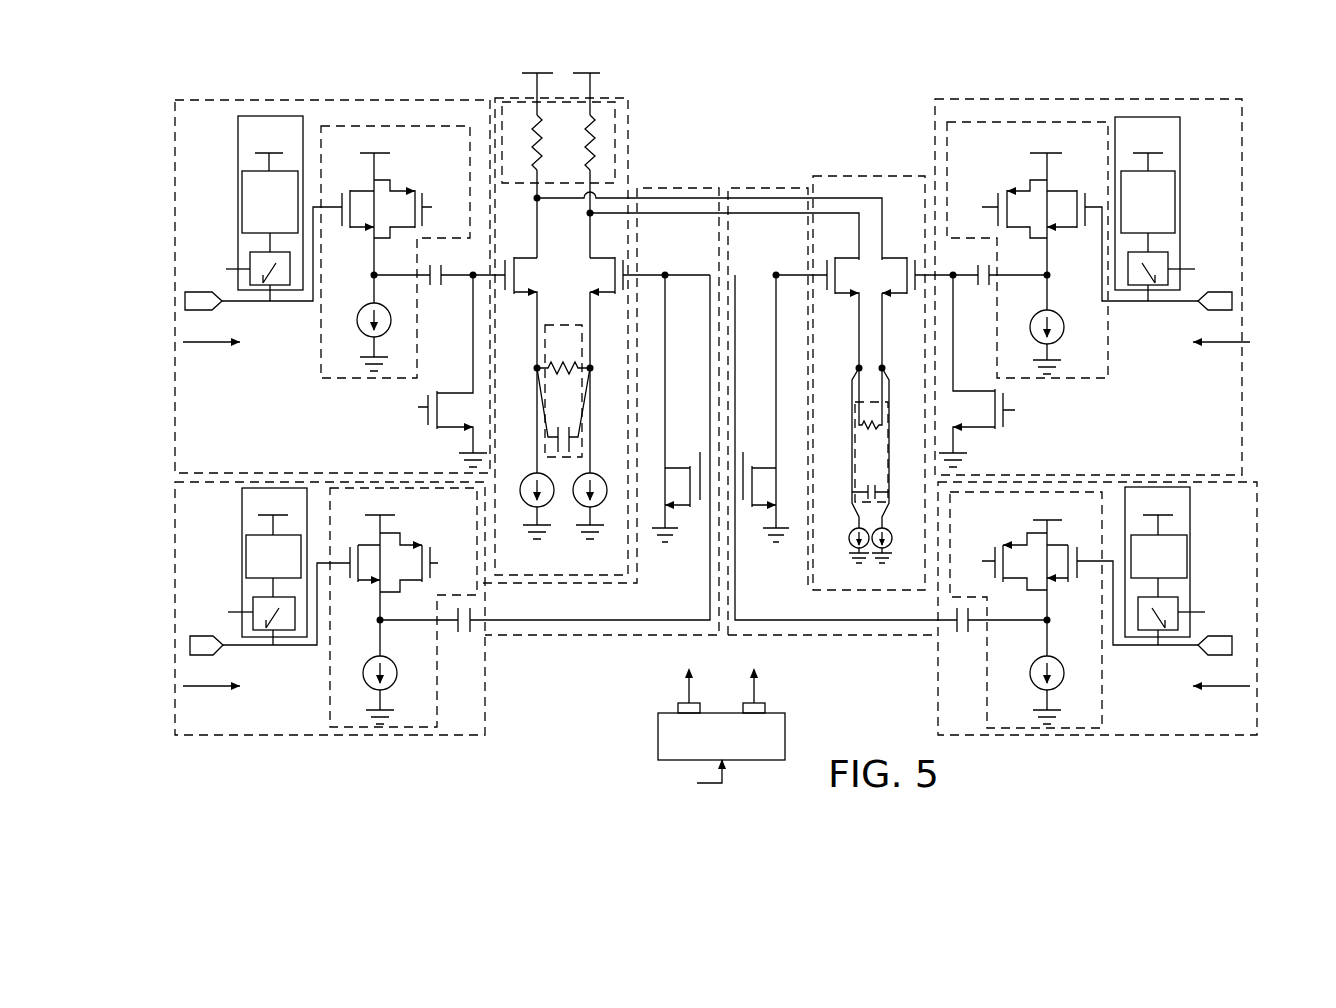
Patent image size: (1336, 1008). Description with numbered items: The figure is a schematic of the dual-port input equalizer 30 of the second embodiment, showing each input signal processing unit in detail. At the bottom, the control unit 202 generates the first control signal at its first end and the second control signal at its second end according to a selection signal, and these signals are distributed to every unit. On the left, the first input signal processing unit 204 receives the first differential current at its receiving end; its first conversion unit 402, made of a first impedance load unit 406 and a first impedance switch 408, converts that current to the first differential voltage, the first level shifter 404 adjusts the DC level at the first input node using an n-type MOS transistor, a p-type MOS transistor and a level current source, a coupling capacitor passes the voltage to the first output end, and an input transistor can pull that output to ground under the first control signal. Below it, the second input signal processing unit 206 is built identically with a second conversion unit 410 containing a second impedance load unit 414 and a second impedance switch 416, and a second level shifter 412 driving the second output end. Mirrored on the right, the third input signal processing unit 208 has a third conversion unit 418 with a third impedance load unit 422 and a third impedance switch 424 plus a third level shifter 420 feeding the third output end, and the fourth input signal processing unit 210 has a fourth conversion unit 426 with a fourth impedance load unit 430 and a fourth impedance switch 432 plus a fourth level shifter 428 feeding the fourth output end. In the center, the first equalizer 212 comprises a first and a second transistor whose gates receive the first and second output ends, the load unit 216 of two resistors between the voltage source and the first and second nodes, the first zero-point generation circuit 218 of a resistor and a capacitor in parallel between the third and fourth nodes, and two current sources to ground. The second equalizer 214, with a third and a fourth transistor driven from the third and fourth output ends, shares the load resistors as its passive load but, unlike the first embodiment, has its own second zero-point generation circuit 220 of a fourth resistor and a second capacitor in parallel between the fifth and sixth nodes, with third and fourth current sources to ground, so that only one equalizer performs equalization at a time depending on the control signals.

The dual-port input equalizer 30 is at (872, 93).
The control unit 202 is at (658, 740).
The first input signal processing unit 204 is at (330, 100).
The second input signal processing unit 206 is at (665, 188).
The third input signal processing unit 208 is at (1080, 99).
The fourth input signal processing unit 210 is at (775, 188).
The first equalizer 212 is at (628, 120).
The second equalizer 214 is at (894, 356).
The load unit 216 is at (525, 102).
The first zero-point generation circuit 218 is at (558, 325).
The second zero-point generation circuit 220 is at (853, 432).
The first conversion unit 402 is at (241, 201).
The first level shifter 404 is at (392, 126).
The first impedance load unit 406 is at (242, 205).
The first impedance switch 408 is at (290, 288).
The second conversion unit 410 is at (240, 591).
The second level shifter 412 is at (330, 707).
The second impedance load unit 414 is at (246, 560).
The second impedance switch 416 is at (287, 630).
The third conversion unit 418 is at (1202, 201).
The third level shifter 420 is at (1012, 122).
The third impedance load unit 422 is at (1178, 200).
The third impedance switch 424 is at (1143, 288).
The fourth conversion unit 426 is at (1211, 591).
The fourth level shifter 428 is at (1102, 705).
The fourth impedance load unit 430 is at (1190, 545).
The fourth impedance switch 432 is at (1150, 630).